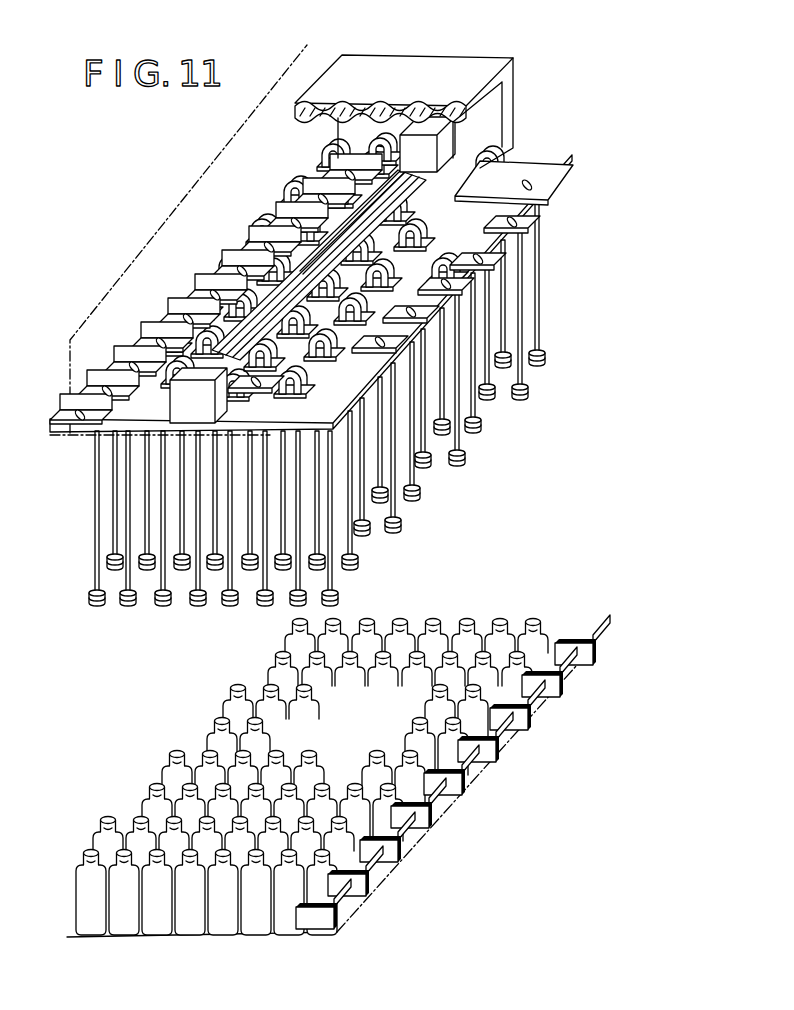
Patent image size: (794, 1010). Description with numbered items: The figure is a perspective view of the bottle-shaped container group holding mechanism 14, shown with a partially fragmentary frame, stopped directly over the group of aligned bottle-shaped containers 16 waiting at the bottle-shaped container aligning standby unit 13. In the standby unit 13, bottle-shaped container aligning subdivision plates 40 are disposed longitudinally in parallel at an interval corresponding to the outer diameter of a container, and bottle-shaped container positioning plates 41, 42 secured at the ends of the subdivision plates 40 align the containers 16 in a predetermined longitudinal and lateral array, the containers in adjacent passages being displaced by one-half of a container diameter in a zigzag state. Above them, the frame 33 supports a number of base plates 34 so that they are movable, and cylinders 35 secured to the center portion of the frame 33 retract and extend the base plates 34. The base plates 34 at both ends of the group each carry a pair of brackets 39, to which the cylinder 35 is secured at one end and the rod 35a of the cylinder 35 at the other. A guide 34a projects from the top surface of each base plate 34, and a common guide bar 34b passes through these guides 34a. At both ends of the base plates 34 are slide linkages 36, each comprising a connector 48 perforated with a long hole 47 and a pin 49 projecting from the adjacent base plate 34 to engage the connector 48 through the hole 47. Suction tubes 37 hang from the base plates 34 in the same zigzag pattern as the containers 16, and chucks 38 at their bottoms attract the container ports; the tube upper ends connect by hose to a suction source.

The bottle-shaped container aligning standby unit 13 is at (602, 654).
The bottle-shaped container group holding mechanism 14 is at (333, 62).
The bottle-shaped container 16 is at (283, 640).
The frame 33 is at (480, 62).
The base plate 34 is at (518, 163).
The guide 34a is at (440, 222).
The common guide bar 34b is at (345, 162).
The cylinder 35 is at (150, 330).
The rod 35a is at (418, 153).
The slide linkage 36 is at (554, 185).
The suction tube 37 is at (538, 230).
The chuck 38 is at (527, 385).
The bracket 39 is at (423, 135).
The bottle-shaped container aligning subdivision plate 40 is at (577, 643).
The bottle-shaped container positioning plate 41 is at (555, 667).
The bottle-shaped container positioning plate 42 is at (540, 700).
The long hole 47 is at (205, 257).
The connector 48 is at (167, 293).
The pin 49 is at (200, 263).